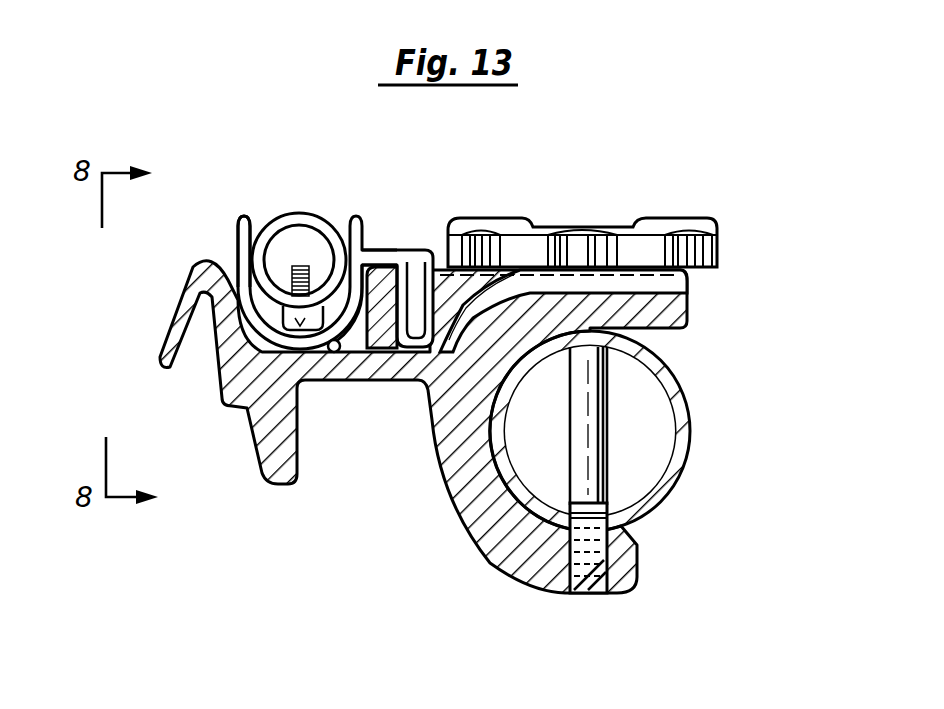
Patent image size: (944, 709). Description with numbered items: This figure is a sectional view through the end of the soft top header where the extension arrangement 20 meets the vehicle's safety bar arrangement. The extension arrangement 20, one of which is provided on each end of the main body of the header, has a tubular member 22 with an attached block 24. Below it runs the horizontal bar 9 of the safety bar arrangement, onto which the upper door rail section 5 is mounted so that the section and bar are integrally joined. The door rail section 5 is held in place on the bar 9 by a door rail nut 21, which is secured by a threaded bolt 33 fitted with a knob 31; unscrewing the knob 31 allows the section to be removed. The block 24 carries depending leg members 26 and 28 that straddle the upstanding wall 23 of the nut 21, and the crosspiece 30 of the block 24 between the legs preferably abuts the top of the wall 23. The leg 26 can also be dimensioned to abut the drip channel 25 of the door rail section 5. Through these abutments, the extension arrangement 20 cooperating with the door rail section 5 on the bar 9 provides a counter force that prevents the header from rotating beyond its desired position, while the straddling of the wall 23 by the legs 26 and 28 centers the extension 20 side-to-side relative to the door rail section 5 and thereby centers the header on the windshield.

The upper door rail section 5 is at (168, 314).
The horizontal bar 9 is at (694, 420).
The extension arrangement 20 is at (273, 190).
The door rail nut 21 is at (697, 298).
The tubular member 22 is at (302, 213).
The upstanding wall 23 is at (386, 350).
The block 24 is at (233, 243).
The drip channel 25 is at (333, 353).
The depending leg member 26 is at (360, 340).
The depending leg member 28 is at (423, 349).
The crosspiece 30 is at (380, 249).
The knob 31 is at (667, 217).
The threaded bolt 33 is at (582, 468).